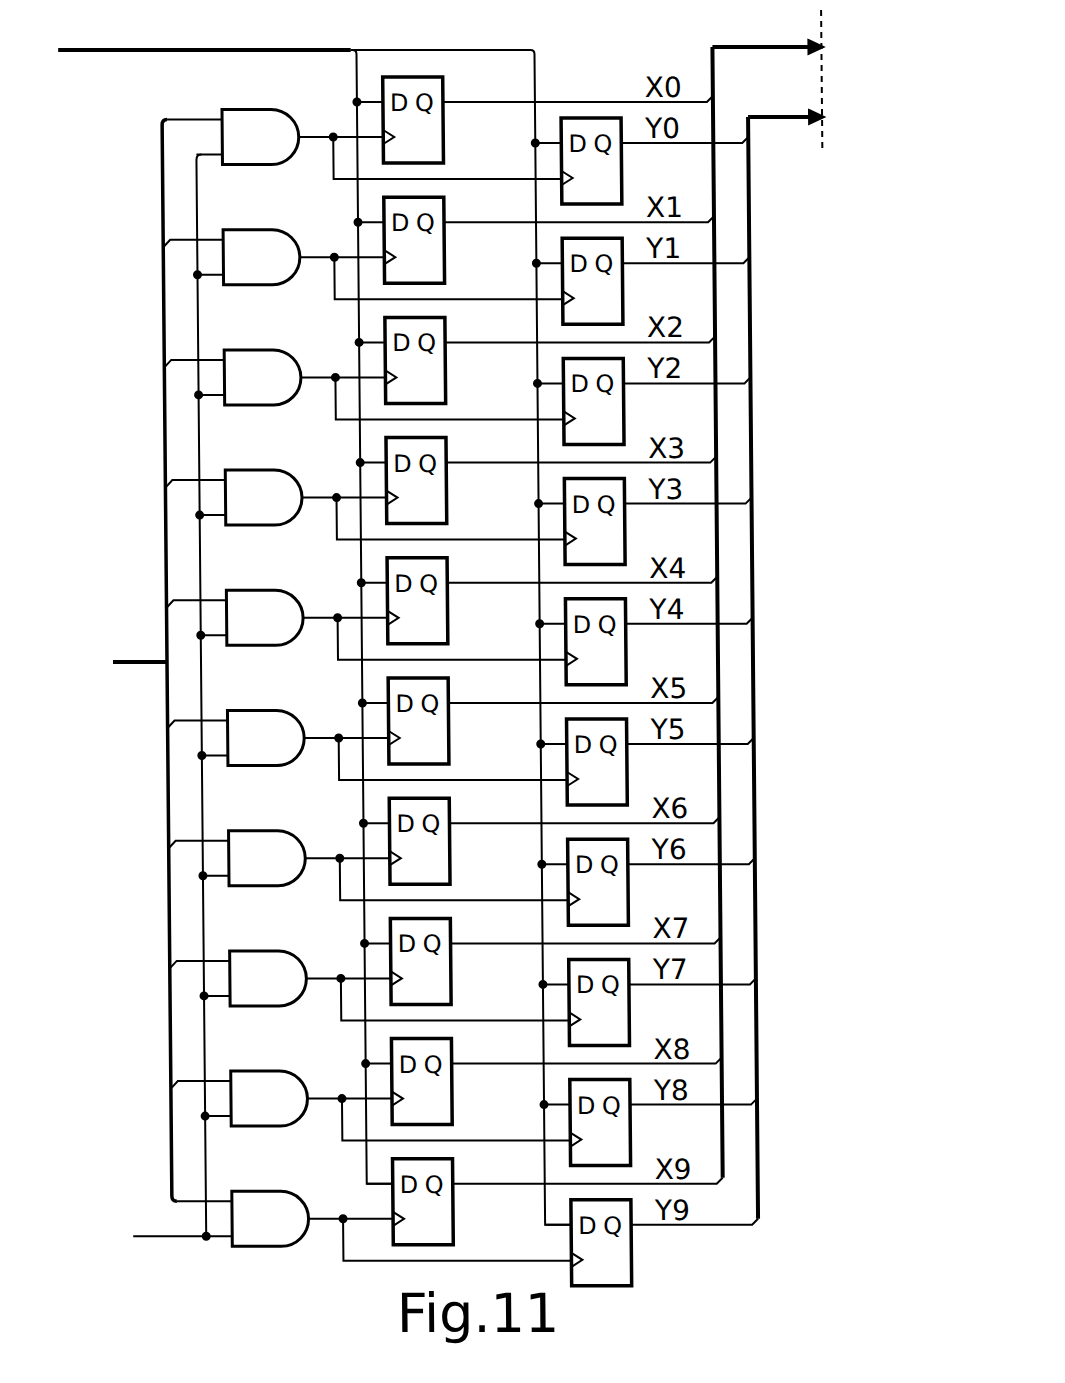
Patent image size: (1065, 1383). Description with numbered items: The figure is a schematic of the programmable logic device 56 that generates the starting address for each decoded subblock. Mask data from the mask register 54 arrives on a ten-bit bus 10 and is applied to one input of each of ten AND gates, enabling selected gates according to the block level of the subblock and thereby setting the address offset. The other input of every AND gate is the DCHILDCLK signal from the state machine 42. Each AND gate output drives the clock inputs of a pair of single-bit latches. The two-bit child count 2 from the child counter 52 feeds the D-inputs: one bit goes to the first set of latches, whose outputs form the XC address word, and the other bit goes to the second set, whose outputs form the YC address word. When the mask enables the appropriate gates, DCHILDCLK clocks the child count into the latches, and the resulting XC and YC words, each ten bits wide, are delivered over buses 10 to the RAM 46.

The child count 2 is at (305, 67).
The ten-bit bus 10 is at (763, 63).
The state machine 42 is at (149, 717).
The memory 46 is at (863, 80).
The child counter 52 is at (204, 30).
The mask register 54 is at (127, 661).
The programmable logic device 56 is at (604, 47).